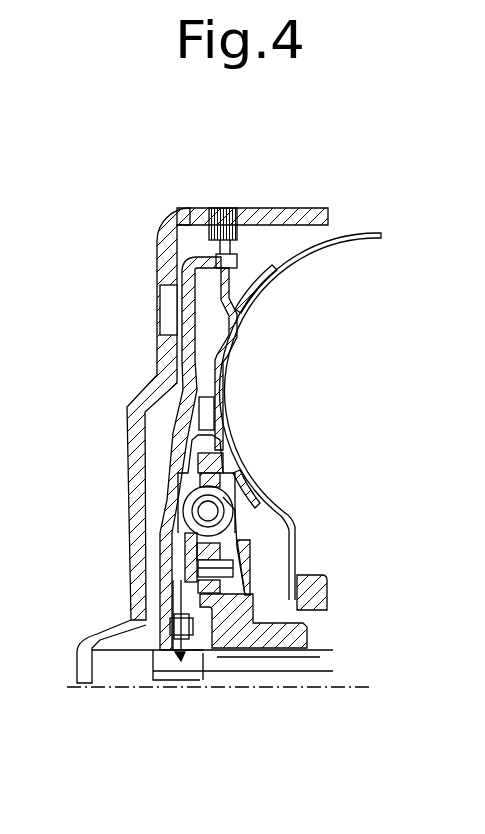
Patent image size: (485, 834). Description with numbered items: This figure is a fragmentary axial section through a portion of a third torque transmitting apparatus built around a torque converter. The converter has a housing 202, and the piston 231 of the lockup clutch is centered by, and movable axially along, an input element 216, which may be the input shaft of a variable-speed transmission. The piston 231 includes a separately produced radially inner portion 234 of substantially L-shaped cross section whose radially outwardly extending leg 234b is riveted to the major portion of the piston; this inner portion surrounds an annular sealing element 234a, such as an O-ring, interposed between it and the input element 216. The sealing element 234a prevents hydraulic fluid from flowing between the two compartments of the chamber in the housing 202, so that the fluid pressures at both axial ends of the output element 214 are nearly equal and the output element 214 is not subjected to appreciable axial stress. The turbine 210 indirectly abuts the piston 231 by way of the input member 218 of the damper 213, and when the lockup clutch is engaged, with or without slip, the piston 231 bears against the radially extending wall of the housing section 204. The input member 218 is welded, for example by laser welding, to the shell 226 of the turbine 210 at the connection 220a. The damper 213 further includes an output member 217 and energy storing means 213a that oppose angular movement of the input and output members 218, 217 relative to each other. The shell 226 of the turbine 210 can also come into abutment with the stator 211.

The housing 202 is at (176, 213).
The housing section 204 is at (160, 258).
The turbine 210 is at (361, 226).
The connection 220a is at (243, 325).
The input member 218 is at (210, 363).
The piston 231 is at (177, 440).
The energy storing means 213a is at (241, 499).
The damper 213 is at (190, 516).
The shell 226 is at (277, 507).
The output member 217 is at (172, 587).
The stator 211 is at (327, 590).
The output element 214 is at (257, 635).
The radially inner portion 234 is at (197, 653).
The sealing element 234a is at (182, 662).
The radially outwardly extending leg 234b is at (57, 660).
The input element 216 is at (195, 662).